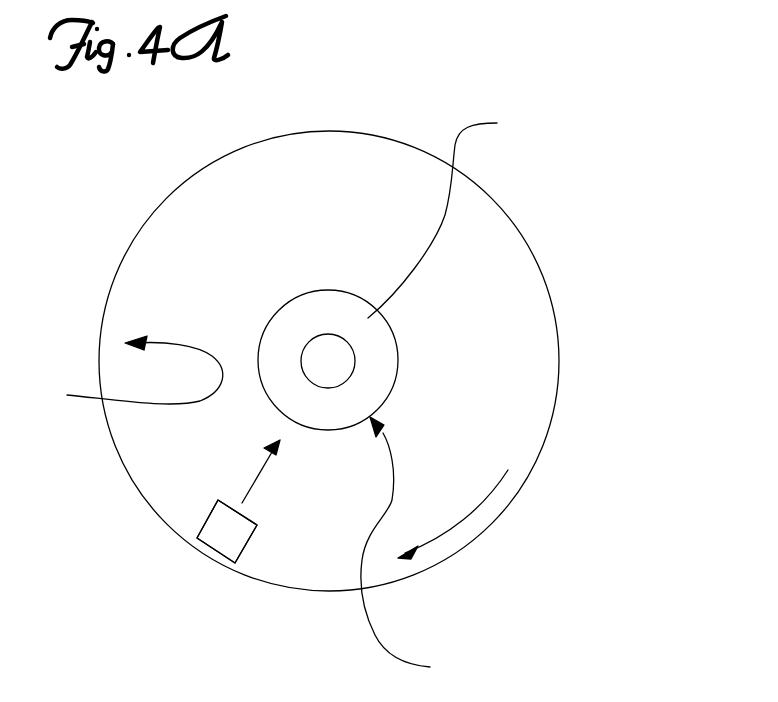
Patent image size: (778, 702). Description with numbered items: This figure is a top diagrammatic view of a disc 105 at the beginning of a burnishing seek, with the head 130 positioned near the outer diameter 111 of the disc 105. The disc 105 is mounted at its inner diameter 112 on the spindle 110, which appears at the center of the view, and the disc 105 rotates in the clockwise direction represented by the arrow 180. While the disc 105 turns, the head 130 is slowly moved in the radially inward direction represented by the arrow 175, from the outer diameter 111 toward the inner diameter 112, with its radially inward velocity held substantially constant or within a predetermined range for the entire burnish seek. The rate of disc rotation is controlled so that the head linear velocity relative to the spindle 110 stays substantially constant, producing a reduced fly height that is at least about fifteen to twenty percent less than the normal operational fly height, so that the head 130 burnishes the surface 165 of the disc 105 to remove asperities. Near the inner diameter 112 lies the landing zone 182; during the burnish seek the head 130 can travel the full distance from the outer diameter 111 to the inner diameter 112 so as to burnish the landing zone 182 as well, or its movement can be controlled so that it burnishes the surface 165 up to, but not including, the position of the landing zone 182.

The disc 105 is at (556, 416).
The spindle 110 is at (356, 363).
The outer diameter 111 is at (128, 370).
The inner diameter 112 is at (417, 547).
The head 130 is at (257, 522).
The surface 165 is at (493, 273).
The arrow 175 is at (245, 492).
The arrow 180 is at (473, 513).
The landing zone 182 is at (453, 215).